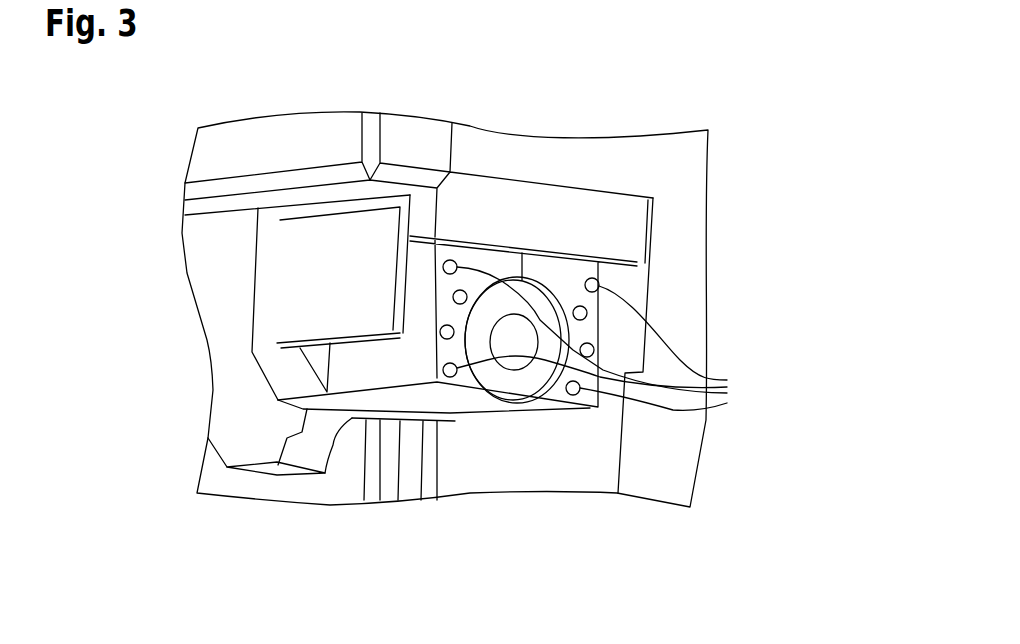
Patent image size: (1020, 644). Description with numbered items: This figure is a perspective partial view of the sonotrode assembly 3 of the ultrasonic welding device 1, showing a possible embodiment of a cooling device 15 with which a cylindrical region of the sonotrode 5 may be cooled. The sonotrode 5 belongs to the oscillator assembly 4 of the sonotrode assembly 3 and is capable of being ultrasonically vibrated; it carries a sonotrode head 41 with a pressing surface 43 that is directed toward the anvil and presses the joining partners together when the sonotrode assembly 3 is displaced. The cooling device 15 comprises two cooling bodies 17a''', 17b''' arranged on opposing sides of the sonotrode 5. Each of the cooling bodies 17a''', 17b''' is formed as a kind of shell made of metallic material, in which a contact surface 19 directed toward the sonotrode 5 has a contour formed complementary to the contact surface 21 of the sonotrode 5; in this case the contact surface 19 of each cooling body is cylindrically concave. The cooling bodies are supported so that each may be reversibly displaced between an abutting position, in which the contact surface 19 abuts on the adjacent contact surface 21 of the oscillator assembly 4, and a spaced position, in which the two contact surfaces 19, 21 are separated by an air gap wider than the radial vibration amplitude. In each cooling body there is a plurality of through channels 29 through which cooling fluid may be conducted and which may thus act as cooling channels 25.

The ultrasonic welding device 1 is at (136, 150).
The sonotrode assembly 3 is at (678, 231).
The oscillator assembly 4 is at (456, 355).
The sonotrode 5 is at (512, 385).
The cooling device 15 is at (464, 240).
The cooling body 17a''' is at (445, 459).
The cooling body 17b''' is at (580, 468).
The contact surface 19 is at (548, 292).
The contact surface 21 is at (528, 272).
The cooling channels 25 is at (784, 386).
The through channels 29 is at (611, 348).
The sonotrode head 41 is at (237, 403).
The pressing surface 43 is at (277, 484).